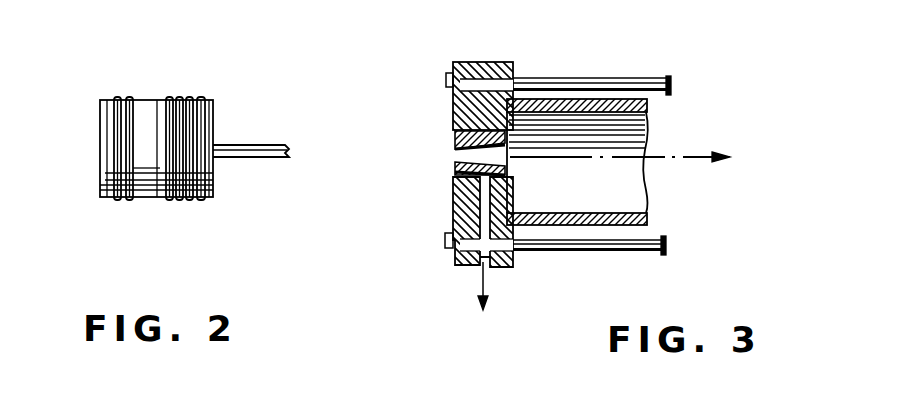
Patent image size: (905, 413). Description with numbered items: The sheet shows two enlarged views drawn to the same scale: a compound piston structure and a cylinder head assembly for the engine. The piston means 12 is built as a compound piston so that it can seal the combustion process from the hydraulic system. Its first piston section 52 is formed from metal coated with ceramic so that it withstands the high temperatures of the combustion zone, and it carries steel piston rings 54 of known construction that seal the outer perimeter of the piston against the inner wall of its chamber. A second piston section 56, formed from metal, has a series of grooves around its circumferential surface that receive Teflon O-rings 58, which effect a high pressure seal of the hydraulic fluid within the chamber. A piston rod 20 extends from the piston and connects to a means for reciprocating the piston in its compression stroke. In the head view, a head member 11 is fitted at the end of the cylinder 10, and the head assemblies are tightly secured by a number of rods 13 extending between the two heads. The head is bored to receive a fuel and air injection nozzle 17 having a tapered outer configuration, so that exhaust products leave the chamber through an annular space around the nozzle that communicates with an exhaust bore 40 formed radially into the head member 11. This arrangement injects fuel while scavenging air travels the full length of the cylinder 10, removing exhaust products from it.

In FIG. 3, the chamber means 10 is at (569, 163).
In FIG. 3, the head member 11 is at (487, 60).
In FIG. 2, the piston means 12 is at (178, 147).
In FIG. 3, the rods 13 is at (585, 82).
In FIG. 3, the fuel and air injection nozzle 17 is at (453, 163).
In FIG. 2, the piston rod 20 is at (270, 148).
In FIG. 3, the exhaust bore 40 is at (494, 260).
In FIG. 2, the first piston section 52 is at (142, 103).
In FIG. 2, the steel piston rings 54 is at (100, 184).
In FIG. 2, the second piston section 56 is at (213, 107).
In FIG. 2, the Teflon O-rings 58 is at (170, 200).